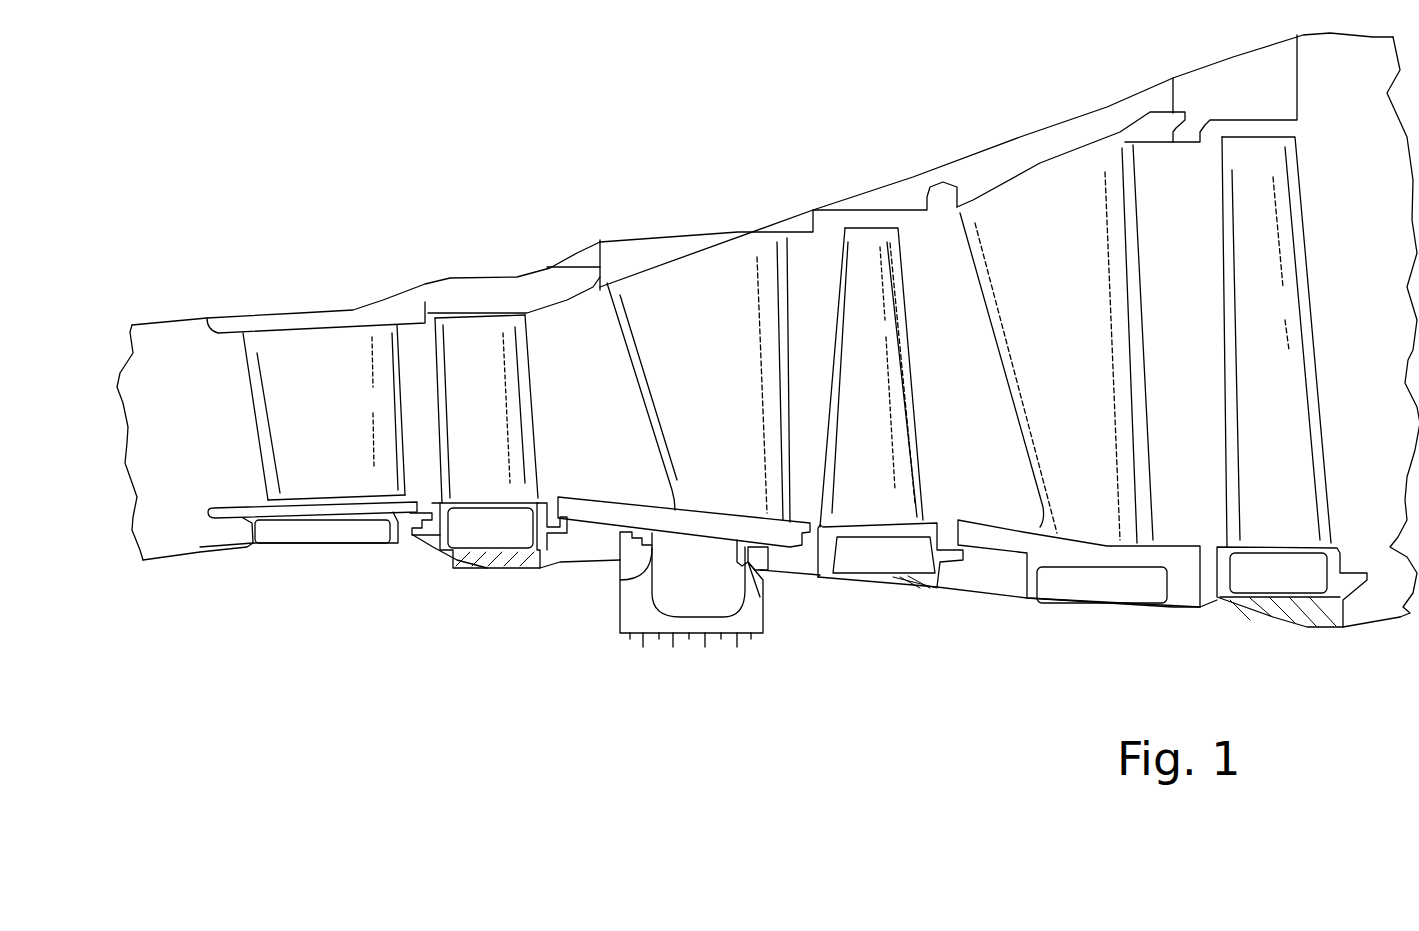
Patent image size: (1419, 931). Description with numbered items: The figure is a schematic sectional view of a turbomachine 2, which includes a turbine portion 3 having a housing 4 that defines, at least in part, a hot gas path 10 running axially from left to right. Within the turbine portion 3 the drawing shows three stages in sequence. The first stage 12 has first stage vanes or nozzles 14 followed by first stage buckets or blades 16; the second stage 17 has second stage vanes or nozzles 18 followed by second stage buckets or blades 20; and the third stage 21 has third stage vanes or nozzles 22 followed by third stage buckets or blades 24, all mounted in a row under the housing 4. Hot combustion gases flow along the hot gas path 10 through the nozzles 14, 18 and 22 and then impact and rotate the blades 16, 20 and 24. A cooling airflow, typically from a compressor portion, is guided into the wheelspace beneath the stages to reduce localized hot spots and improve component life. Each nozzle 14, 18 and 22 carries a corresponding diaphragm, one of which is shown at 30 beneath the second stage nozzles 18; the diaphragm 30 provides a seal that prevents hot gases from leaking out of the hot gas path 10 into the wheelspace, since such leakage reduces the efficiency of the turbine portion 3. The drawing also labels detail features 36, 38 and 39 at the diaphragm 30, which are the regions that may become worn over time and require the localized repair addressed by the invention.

The turbomachine 2 is at (212, 180).
The turbine portion 3 is at (588, 228).
The housing 4 is at (428, 284).
The hot gas path 10 is at (155, 484).
The first stage 12 is at (240, 292).
The first stage vanes or nozzles 14 is at (308, 436).
The first stage buckets or blades 16 is at (497, 443).
The second stage 17 is at (808, 258).
The second stage vanes or nozzles 18 is at (684, 392).
The second stage buckets or blades 20 is at (873, 387).
The third stage 21 is at (1092, 78).
The third stage vanes or nozzles 22 is at (1079, 376).
The third stage buckets or blades 24 is at (1263, 233).
The diaphragm 30 is at (598, 655).
The retainer channel 36 is at (693, 623).
The first clip 38 is at (620, 580).
The second clip 39 is at (760, 597).